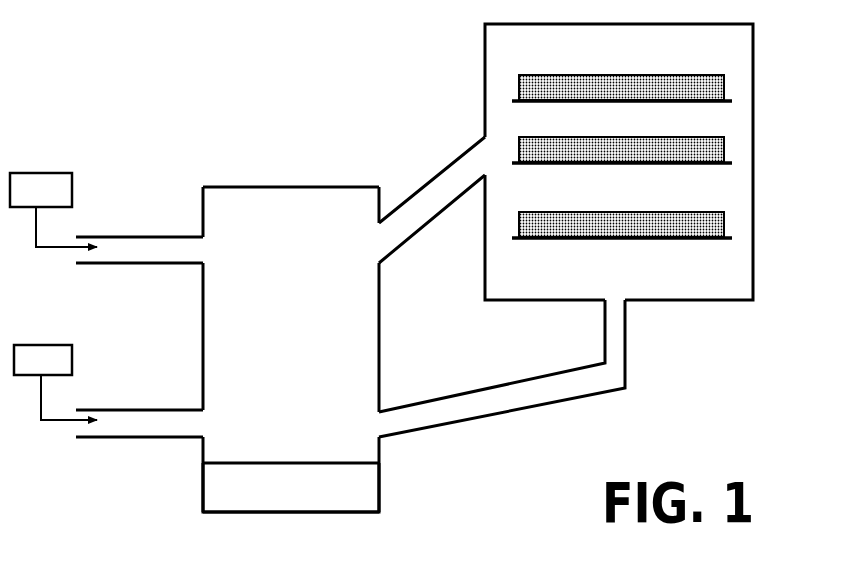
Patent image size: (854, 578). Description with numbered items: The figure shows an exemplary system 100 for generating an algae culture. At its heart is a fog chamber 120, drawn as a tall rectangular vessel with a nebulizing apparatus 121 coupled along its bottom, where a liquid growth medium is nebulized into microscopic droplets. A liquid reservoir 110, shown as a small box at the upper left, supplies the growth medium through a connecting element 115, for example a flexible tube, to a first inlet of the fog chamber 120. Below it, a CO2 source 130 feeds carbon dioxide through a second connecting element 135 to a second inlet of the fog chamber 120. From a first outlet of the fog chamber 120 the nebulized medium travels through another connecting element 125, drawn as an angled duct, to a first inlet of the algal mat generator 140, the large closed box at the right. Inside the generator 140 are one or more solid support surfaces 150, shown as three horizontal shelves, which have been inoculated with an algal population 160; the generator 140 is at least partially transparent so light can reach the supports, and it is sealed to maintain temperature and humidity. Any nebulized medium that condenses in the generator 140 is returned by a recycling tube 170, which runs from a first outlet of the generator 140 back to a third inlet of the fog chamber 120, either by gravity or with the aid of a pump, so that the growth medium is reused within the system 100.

The system 100 is at (418, 257).
The liquid reservoir 110 is at (53, 210).
The connecting element 115 is at (139, 250).
The fog chamber 120 is at (291, 349).
The nebulizing apparatus 121 is at (291, 487).
The connecting element 125 is at (432, 200).
The CO2 source 130 is at (55, 382).
The connecting element 135 is at (139, 423).
The algal mat generator 140 is at (484, 77).
The solid support surfaces 150 is at (727, 160).
The algal population 160 is at (693, 153).
The tube 170 is at (502, 377).